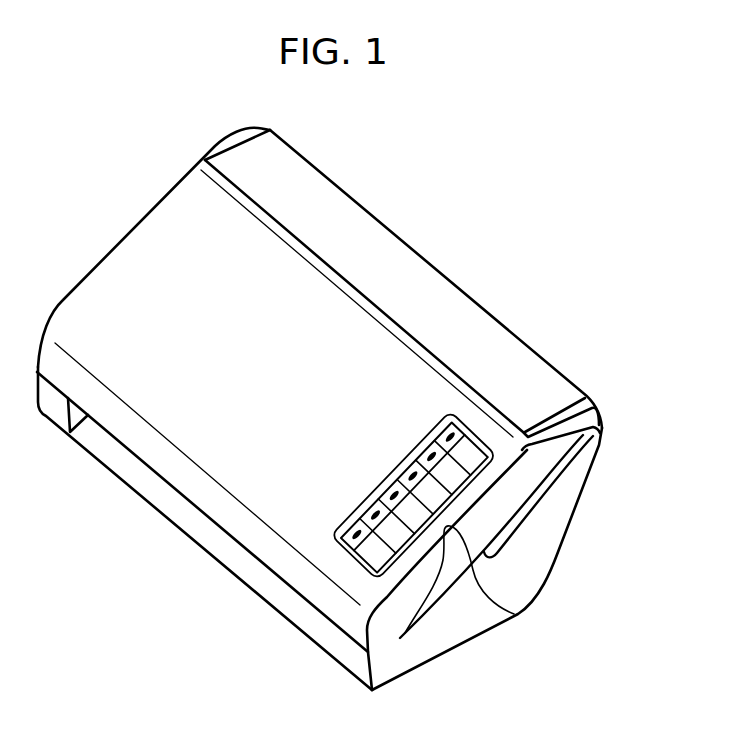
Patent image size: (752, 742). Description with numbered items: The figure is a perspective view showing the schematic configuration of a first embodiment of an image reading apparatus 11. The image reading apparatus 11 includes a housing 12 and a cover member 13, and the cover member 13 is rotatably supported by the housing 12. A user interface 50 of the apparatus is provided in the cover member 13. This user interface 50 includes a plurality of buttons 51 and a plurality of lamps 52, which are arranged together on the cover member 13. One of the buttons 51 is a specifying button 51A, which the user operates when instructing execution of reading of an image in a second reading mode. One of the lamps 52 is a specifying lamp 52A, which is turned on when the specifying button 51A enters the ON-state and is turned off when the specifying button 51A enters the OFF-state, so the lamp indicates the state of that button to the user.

The image reading apparatus 11 is at (595, 257).
The housing 12 is at (558, 554).
The cover member 13 is at (120, 243).
The user interface 50 is at (352, 560).
The buttons 51 is at (514, 614).
The specifying button 51A is at (397, 542).
The lamps 52 is at (387, 483).
The specifying lamp 52A is at (370, 513).